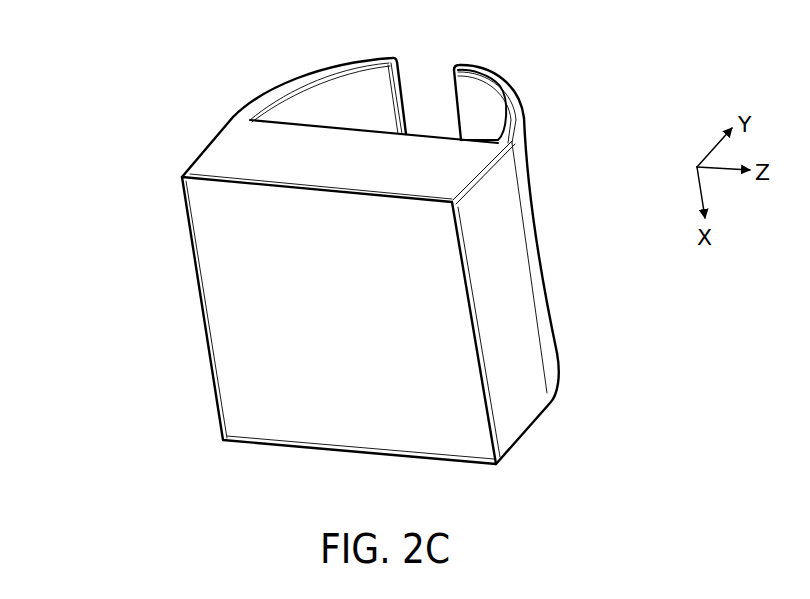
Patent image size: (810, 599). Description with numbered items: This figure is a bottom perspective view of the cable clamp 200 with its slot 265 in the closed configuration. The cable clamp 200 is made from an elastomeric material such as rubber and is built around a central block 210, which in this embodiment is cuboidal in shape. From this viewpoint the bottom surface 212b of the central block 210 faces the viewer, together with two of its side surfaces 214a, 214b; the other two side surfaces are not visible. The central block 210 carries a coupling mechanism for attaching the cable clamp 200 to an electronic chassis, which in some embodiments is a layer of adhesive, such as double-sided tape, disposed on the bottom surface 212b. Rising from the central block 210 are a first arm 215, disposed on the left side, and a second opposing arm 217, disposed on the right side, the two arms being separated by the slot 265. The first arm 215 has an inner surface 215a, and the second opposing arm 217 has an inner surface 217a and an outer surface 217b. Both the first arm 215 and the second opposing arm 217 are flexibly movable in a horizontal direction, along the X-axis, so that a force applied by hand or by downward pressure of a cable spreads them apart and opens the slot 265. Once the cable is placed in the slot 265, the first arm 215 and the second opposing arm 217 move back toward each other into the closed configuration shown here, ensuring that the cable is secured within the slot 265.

The cable clamp 200 is at (140, 147).
The central block 210 is at (188, 347).
The bottom surface 212b is at (367, 333).
The side surface 214a is at (368, 167).
The side surface 214b is at (537, 300).
The first arm 215 is at (308, 63).
The inner surface 215a is at (380, 113).
The second opposing arm 217 is at (518, 70).
The inner surface 217a is at (480, 108).
The outer surface 217b is at (525, 213).
The slot 265 is at (413, 65).